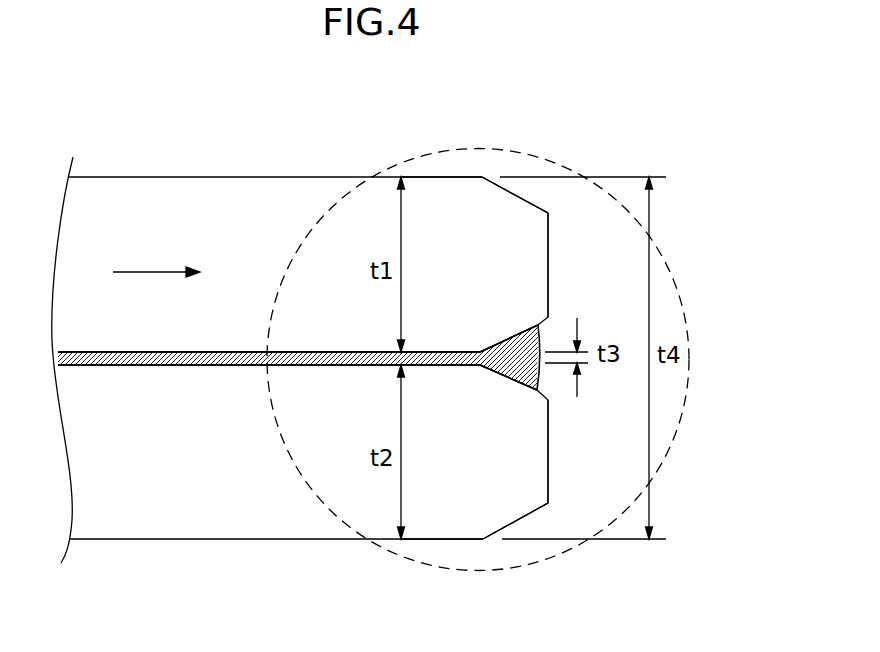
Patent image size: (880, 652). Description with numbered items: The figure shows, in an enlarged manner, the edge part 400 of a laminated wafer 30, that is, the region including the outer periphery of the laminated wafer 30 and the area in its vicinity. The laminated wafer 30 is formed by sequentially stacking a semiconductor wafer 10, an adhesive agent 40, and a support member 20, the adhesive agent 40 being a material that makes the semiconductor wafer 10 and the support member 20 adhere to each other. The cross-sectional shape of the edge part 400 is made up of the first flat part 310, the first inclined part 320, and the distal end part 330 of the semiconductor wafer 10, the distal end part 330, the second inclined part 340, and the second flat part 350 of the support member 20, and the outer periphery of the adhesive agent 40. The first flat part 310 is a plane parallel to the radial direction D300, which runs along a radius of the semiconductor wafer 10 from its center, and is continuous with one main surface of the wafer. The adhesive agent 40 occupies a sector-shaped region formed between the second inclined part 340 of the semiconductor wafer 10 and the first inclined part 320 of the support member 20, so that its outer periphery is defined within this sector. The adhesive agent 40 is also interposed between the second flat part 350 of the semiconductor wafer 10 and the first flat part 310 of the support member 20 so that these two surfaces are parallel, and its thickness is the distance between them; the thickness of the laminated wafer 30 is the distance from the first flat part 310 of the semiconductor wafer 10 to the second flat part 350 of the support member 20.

The semiconductor wafer 10 is at (252, 177).
The support member 20 is at (270, 540).
The laminated wafer 30 is at (512, 130).
The adhesive agent 40 is at (540, 381).
The first flat part 310 is at (438, 178).
The first inclined part 320 is at (507, 192).
The distal end part 330 is at (548, 290).
The second inclined part 340 is at (515, 336).
The second flat part 350 is at (325, 352).
The edge part 400 is at (668, 450).
The radial direction D300 is at (156, 256).